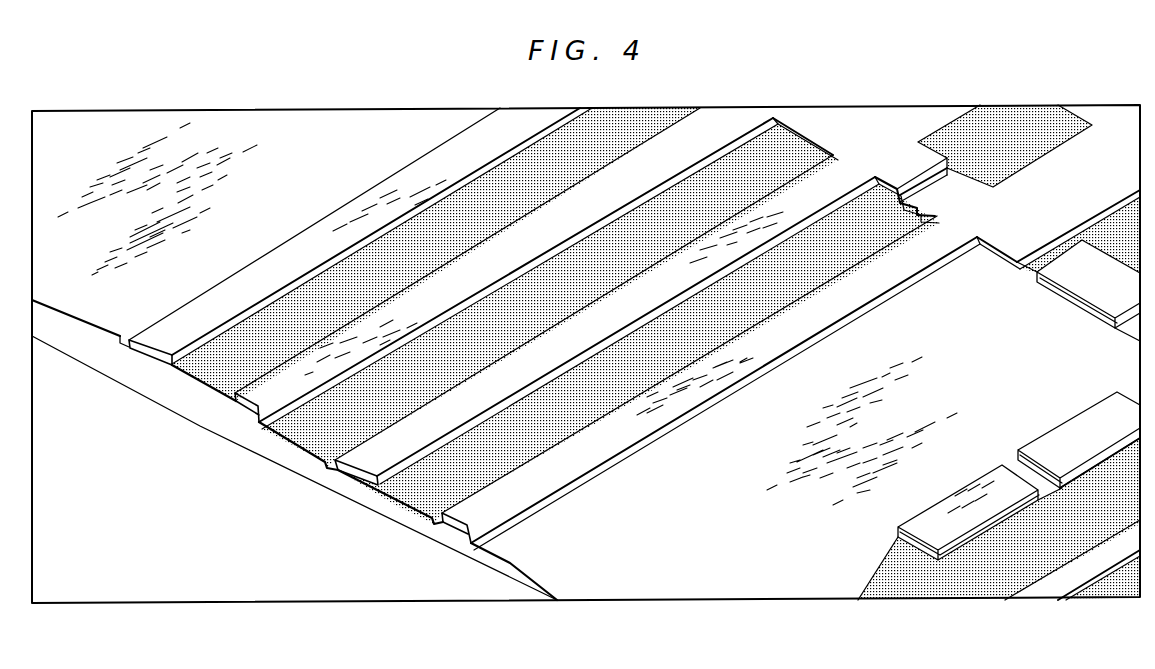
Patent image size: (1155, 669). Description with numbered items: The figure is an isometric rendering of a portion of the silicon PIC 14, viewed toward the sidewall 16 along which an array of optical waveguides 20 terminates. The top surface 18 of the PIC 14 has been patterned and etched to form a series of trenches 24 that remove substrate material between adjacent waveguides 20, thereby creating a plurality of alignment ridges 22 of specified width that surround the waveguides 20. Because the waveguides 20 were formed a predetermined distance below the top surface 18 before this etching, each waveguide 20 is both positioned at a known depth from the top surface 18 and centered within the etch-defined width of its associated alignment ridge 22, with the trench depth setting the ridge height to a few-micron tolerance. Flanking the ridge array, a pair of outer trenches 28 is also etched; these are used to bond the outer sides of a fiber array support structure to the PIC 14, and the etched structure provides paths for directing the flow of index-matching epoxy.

The PIC 14 is at (206, 92).
The sidewall 16 is at (490, 572).
The top surface 18 is at (207, 295).
The optical waveguides 20 is at (343, 477).
The alignment ridges 22 is at (693, 140).
The trenches 24 is at (207, 385).
The outer trenches 28 is at (97, 302).